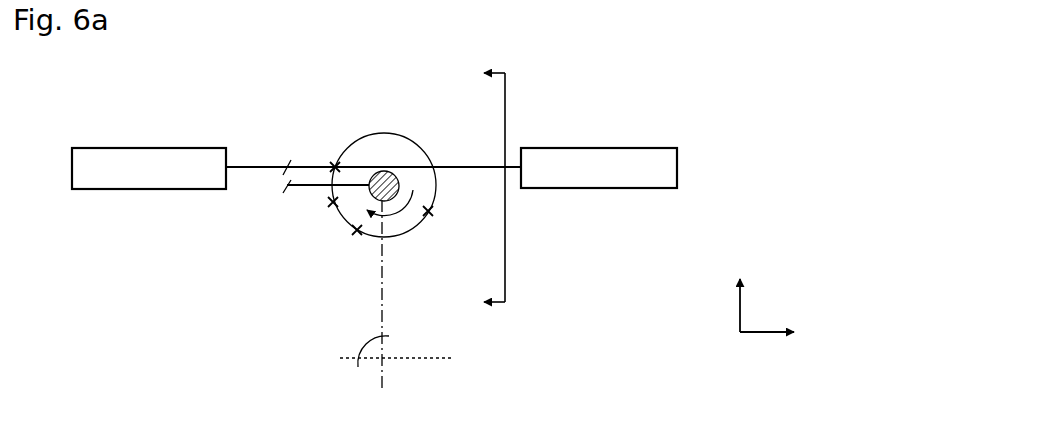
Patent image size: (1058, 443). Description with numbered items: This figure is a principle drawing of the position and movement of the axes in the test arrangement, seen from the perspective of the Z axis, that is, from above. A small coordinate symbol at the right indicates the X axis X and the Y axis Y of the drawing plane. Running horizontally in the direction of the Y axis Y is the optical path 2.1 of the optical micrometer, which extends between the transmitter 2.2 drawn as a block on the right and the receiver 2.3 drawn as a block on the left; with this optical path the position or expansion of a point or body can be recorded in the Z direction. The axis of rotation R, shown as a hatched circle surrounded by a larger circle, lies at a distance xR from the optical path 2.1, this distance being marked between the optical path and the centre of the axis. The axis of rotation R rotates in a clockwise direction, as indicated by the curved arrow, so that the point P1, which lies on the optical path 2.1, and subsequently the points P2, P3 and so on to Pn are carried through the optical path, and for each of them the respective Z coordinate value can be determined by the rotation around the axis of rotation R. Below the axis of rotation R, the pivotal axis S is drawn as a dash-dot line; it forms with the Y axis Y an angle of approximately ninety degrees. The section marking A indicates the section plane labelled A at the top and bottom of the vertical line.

The optical path 2.1 is at (248, 167).
The transmitter 2.2 is at (588, 173).
The receiver 2.3 is at (139, 177).
The axis of rotation R is at (385, 171).
The distance xR is at (282, 178).
The point P1 is at (335, 167).
The point P2 is at (333, 202).
The point P3 is at (357, 230).
The point Pn is at (428, 211).
The pivotal axis S is at (382, 285).
The section line A- A is at (494, 190).
The X coordinate axis X is at (739, 282).
The Y axis Y is at (782, 332).